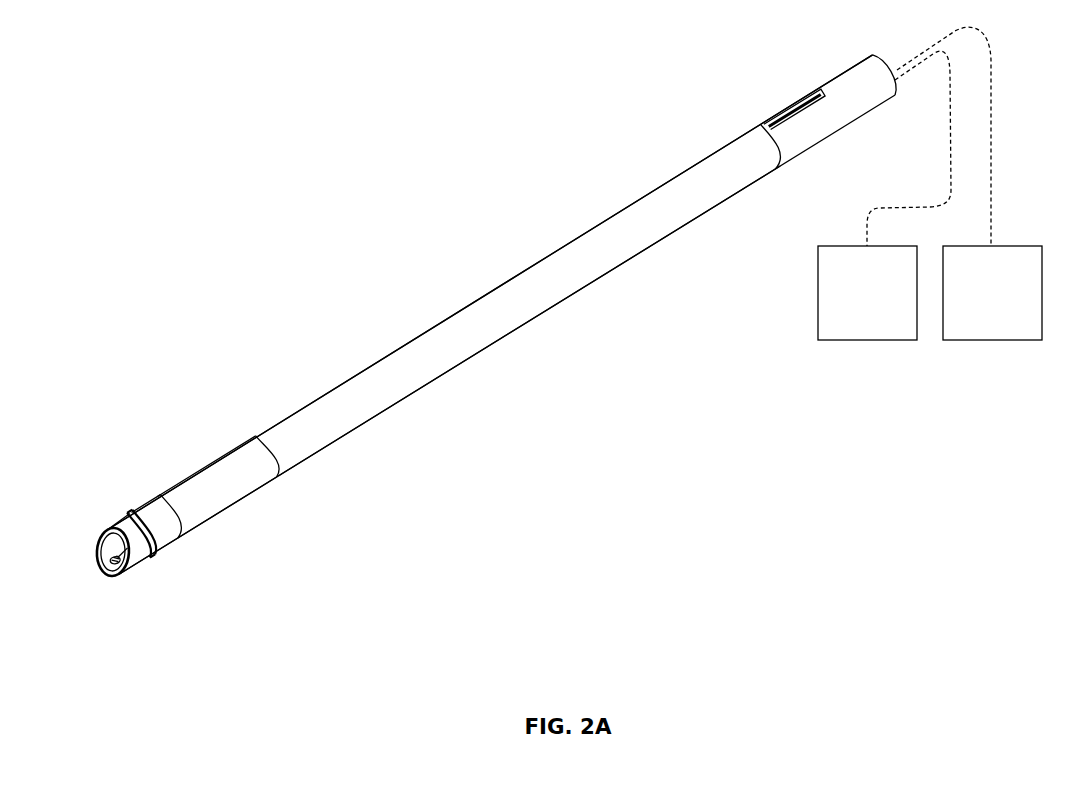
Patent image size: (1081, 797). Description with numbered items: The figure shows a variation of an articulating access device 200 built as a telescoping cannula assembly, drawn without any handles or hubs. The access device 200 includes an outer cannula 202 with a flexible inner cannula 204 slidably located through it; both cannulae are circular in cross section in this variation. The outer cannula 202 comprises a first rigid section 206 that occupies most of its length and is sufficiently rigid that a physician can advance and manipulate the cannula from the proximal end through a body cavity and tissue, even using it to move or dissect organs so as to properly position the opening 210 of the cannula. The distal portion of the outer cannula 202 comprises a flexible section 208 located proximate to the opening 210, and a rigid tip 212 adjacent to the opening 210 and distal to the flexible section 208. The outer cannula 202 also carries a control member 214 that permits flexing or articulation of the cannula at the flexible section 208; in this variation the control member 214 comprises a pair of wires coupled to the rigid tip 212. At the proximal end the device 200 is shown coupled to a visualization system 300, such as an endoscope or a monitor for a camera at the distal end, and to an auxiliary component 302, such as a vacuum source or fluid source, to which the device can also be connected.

The articulating access device 200 is at (183, 148).
The outer cannula 202 is at (351, 375).
The flexible inner cannula 204 is at (137, 558).
The first rigid section 206 is at (604, 267).
The flexible section 208 is at (210, 487).
The opening 210 is at (156, 553).
The rigid tip 212 is at (153, 516).
The control member 214 is at (791, 108).
The visualization system 300 is at (887, 304).
The fluid source 302 is at (1012, 304).